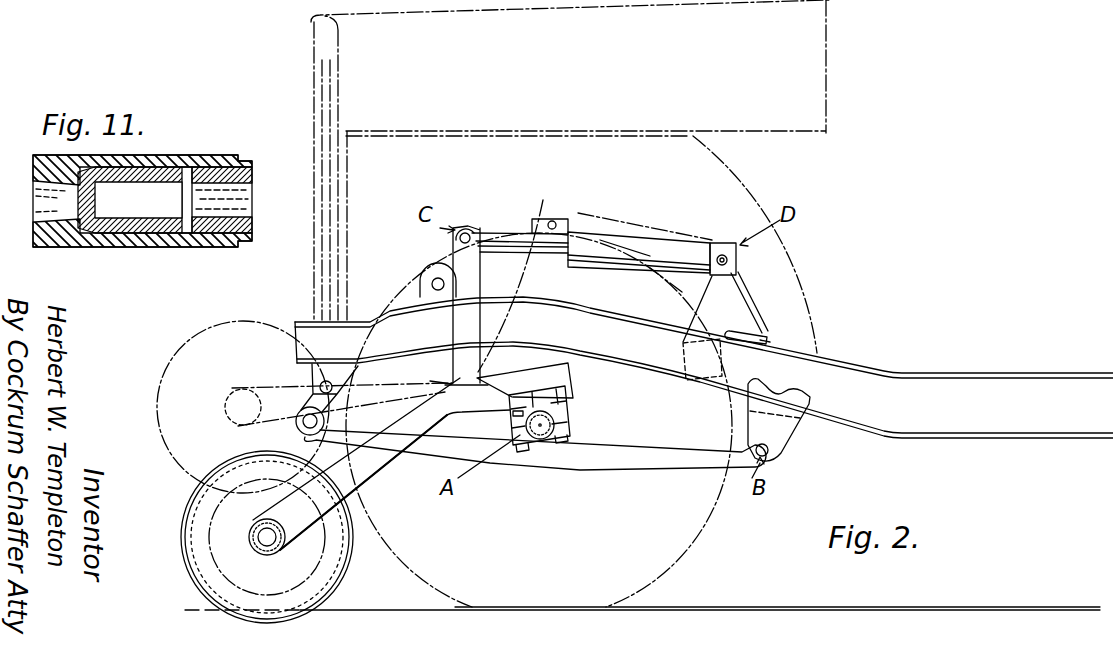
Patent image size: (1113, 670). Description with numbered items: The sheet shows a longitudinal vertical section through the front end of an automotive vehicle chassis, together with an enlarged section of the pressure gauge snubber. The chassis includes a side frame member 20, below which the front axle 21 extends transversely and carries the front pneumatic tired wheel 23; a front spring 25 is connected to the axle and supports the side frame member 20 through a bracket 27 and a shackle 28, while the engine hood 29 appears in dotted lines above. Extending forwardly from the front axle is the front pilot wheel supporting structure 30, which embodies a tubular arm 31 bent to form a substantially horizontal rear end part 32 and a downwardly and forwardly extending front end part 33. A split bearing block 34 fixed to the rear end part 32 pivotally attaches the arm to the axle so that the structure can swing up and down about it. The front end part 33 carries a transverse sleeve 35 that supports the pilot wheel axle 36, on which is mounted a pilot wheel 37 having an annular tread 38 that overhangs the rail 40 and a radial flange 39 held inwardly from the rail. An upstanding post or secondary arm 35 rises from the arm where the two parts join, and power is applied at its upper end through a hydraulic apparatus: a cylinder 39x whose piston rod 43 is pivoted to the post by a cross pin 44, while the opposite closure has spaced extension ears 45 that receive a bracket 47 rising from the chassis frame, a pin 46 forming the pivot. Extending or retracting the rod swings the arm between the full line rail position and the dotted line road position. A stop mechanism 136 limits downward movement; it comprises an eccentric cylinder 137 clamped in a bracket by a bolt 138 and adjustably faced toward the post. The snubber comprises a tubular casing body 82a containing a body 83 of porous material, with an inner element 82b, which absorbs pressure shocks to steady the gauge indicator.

In FIG. 11, the tubular casing body 82a is at (62, 243).
In FIG. 11, the inner sleeve 82b is at (133, 246).
In FIG. 11, the body of porous material 83 is at (164, 228).
In FIG. 2, the hood 29 is at (308, 49).
In FIG. 2, the front pneumatic tired wheel 23 is at (686, 548).
In FIG. 2, the rail 40 is at (400, 609).
In FIG. 2, the bolt 138 is at (436, 300).
In FIG. 2, the side frame member 20 is at (966, 372).
In FIG. 2, the stop mechanism 136 is at (407, 294).
In FIG. 2, the cylinder 137 is at (438, 268).
In FIG. 2, the upstanding post or secondary arm 35 is at (470, 284).
In FIG. 2, the cross pin 44 is at (471, 231).
In FIG. 2, the piston rod 43 is at (512, 236).
In FIG. 2, the cylinder 39x is at (662, 222).
In FIG. 2, the extension ears 45 is at (735, 232).
In FIG. 2, the pin 46 is at (740, 260).
In FIG. 2, the bracket 47 is at (744, 299).
In FIG. 2, the rear end part 32 is at (574, 378).
In FIG. 2, the bearing block 34 is at (573, 421).
In FIG. 2, the front axle 21 is at (540, 440).
In FIG. 2, the front spring 25 is at (652, 460).
In FIG. 2, the bracket 27 is at (782, 442).
In FIG. 2, the shackle 28 is at (307, 384).
In FIG. 2, the arm 31 is at (403, 465).
In FIG. 2, the front pilot wheel supporting structure 30 is at (169, 525).
In FIG. 2, the radial flange 39 is at (330, 594).
In FIG. 2, the annular tread 38 is at (315, 568).
In FIG. 2, the pilot wheel 37 is at (320, 541).
In FIG. 2, the front end part 33 is at (284, 503).
In FIG. 2, the pilot wheel axle 36 is at (249, 535).